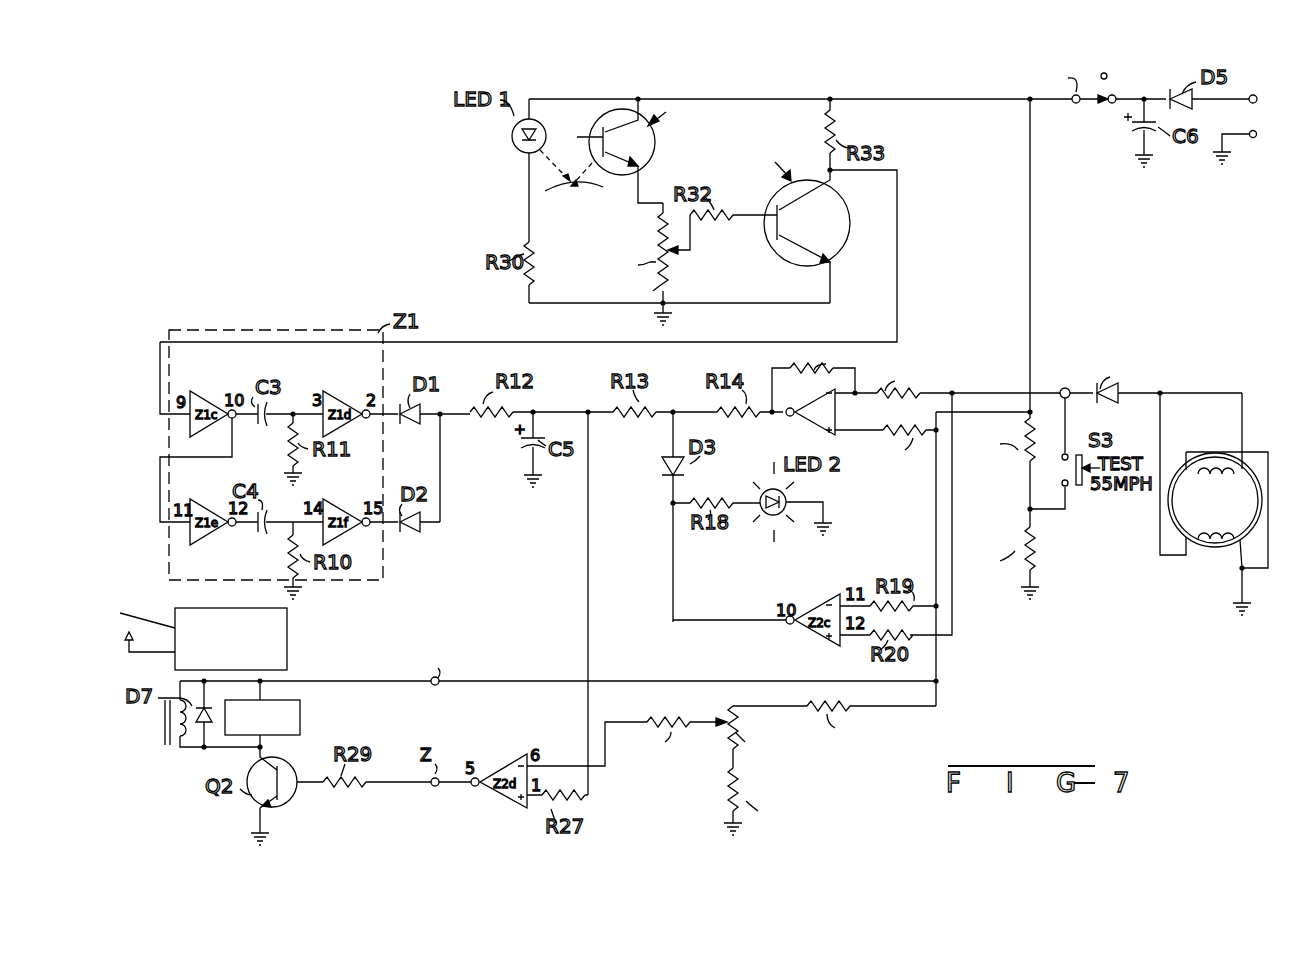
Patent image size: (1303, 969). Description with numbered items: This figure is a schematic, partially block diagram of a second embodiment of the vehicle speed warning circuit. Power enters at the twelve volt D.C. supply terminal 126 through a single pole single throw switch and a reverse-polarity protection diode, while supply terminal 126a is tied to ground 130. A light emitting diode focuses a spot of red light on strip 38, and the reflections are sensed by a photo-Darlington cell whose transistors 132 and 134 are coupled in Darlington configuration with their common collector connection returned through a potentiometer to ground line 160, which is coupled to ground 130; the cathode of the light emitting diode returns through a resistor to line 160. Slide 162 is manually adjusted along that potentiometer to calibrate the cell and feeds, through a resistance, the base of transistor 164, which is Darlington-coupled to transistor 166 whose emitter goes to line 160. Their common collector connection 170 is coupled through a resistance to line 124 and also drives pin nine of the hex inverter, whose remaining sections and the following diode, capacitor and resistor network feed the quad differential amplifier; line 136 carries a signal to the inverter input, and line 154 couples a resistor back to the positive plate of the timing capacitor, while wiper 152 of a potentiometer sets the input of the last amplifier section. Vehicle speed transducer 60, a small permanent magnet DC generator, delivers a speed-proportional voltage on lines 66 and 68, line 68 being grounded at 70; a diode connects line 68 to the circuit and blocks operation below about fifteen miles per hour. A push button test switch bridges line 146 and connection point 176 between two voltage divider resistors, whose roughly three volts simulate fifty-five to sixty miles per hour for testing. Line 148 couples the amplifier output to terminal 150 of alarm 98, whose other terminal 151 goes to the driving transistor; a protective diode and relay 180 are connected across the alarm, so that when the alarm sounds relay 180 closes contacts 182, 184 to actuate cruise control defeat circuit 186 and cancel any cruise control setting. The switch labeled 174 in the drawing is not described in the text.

The strip 38 is at (562, 188).
The vehicle speed transducer 60 is at (1229, 501).
The line 66 is at (1234, 590).
The line 68 is at (1240, 434).
The ground 70 is at (1234, 624).
The alarm 98 is at (309, 722).
The line 124 is at (913, 99).
The 12 volt D.C. power supply terminal 126 is at (1253, 98).
The supply terminal 126a is at (1230, 143).
The ground 130 is at (682, 317).
The transistor 132 is at (597, 122).
The transistor 134 is at (646, 151).
The line 136 is at (446, 342).
The line 146 is at (1056, 388).
The line 148 is at (487, 681).
The terminal 150 is at (262, 688).
The terminal 151 is at (262, 747).
The wiper 152 is at (716, 728).
The line 154 is at (590, 578).
The ground line 160 is at (598, 304).
The slide 162 is at (684, 254).
The transistor 164 is at (775, 195).
The transistor 166 is at (831, 239).
The common collector connection 170 is at (844, 193).
The switch S2 174 is at (1076, 105).
The connection point 176 is at (1020, 510).
The relay 180 is at (158, 736).
The relay contact 182 is at (144, 618).
The relay contact 184 is at (164, 656).
The cruise control defeat circuit 186 is at (289, 652).